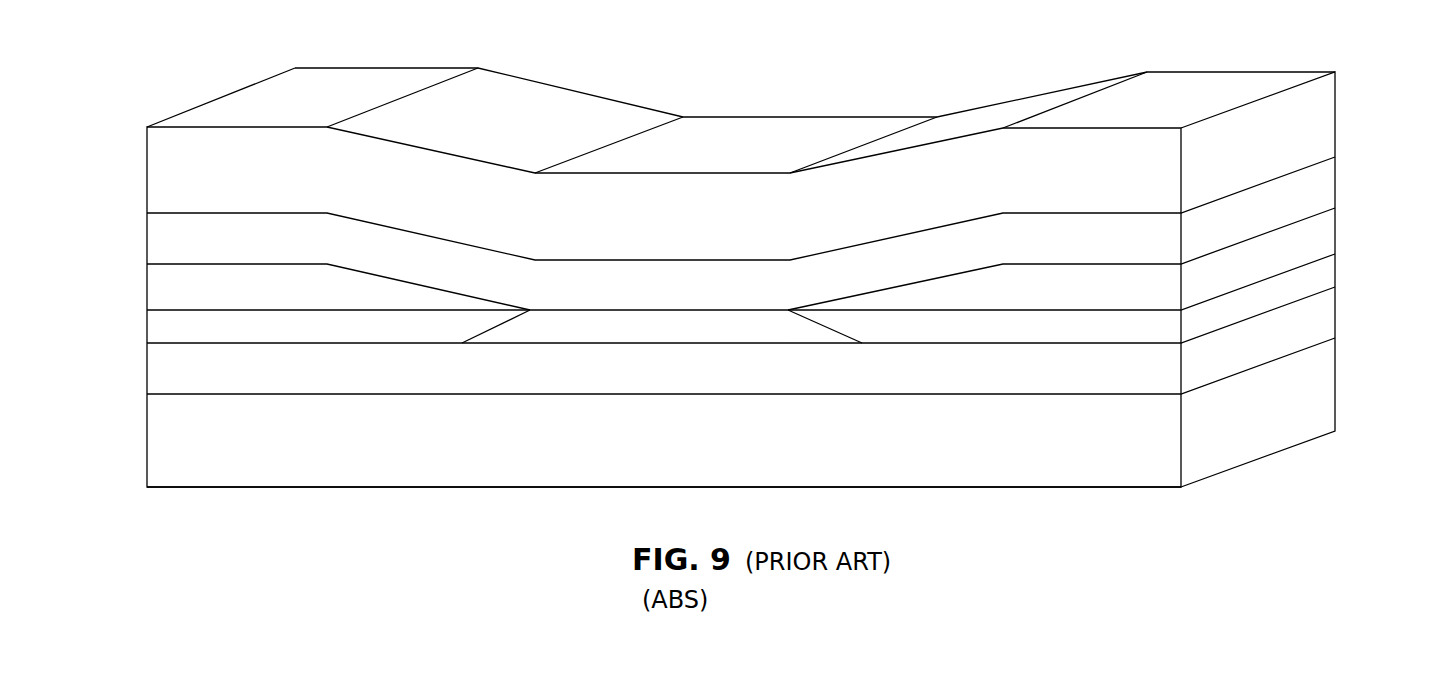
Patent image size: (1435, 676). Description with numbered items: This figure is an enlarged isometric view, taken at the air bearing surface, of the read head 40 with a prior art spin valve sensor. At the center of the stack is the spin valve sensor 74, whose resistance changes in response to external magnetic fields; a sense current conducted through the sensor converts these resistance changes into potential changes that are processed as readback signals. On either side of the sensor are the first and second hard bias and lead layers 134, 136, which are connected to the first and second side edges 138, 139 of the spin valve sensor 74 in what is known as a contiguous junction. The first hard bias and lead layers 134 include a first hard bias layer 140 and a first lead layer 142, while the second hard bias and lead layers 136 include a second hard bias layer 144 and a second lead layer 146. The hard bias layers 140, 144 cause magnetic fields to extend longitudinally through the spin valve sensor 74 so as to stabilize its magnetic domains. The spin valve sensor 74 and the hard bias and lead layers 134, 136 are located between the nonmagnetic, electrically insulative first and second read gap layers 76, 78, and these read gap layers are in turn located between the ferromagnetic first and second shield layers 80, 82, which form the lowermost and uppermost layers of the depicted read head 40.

The read head 40 is at (835, 72).
The second shield layer 82 is at (588, 105).
The second read gap layer 78 is at (392, 245).
The spin valve sensor 74 is at (570, 309).
The first read gap layer 76 is at (540, 385).
The first shield layer 80 is at (318, 468).
The first hard bias and lead layers 134 is at (301, 302).
The second hard bias and lead layers 136 is at (1099, 296).
The first side edge 138 is at (478, 333).
The second side edge 139 is at (840, 335).
The first hard bias layer 140 is at (190, 327).
The first lead layer 142 is at (190, 277).
The second hard bias layer 144 is at (1128, 330).
The second lead layer 146 is at (1128, 278).